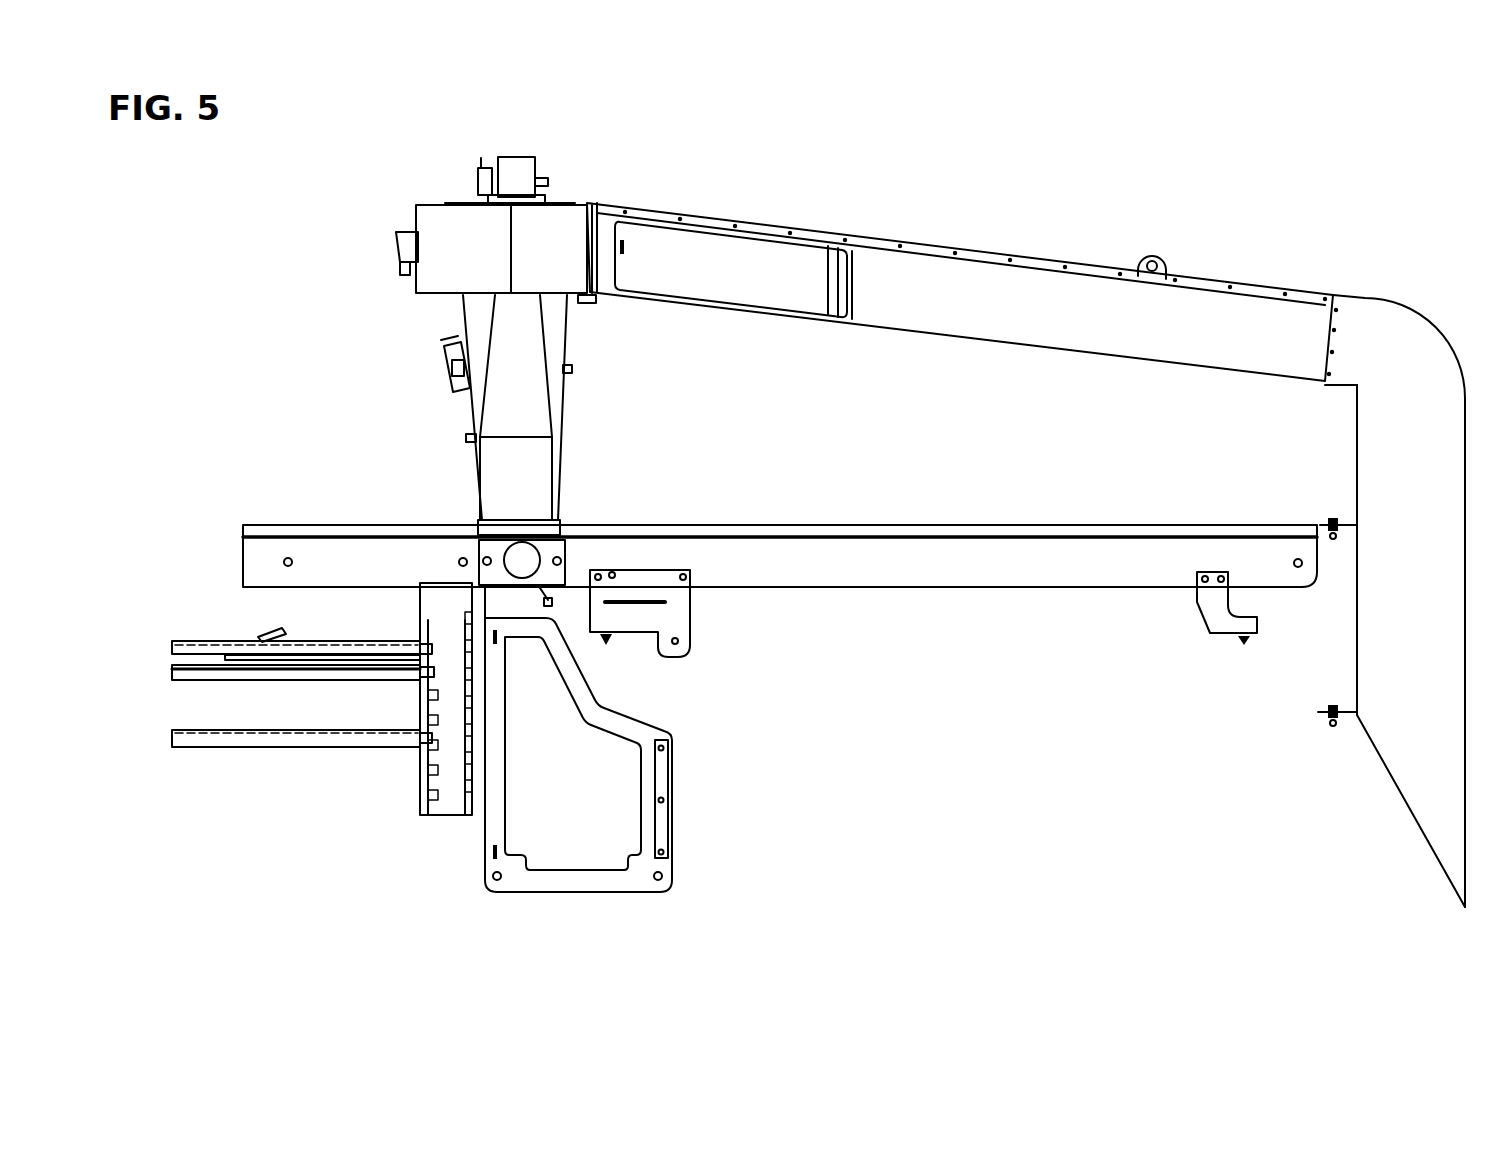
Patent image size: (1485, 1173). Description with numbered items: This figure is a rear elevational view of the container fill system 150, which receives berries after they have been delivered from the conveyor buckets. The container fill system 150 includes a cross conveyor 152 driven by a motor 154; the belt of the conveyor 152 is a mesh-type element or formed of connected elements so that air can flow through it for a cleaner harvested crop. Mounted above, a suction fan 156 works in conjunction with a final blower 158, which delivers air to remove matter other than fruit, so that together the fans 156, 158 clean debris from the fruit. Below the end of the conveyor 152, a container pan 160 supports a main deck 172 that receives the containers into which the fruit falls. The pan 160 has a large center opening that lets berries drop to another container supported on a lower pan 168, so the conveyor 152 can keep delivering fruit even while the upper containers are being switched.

The container fill system 150 is at (871, 152).
The cross conveyor 152 is at (863, 530).
The motor 154 is at (527, 558).
The suction fan 156 is at (440, 218).
The final blower 158 is at (583, 852).
The container pan 160 is at (175, 674).
The lower pan 168 is at (193, 732).
The main deck 172 is at (172, 642).